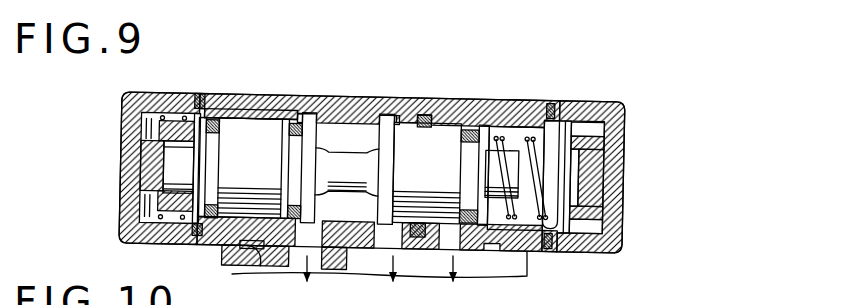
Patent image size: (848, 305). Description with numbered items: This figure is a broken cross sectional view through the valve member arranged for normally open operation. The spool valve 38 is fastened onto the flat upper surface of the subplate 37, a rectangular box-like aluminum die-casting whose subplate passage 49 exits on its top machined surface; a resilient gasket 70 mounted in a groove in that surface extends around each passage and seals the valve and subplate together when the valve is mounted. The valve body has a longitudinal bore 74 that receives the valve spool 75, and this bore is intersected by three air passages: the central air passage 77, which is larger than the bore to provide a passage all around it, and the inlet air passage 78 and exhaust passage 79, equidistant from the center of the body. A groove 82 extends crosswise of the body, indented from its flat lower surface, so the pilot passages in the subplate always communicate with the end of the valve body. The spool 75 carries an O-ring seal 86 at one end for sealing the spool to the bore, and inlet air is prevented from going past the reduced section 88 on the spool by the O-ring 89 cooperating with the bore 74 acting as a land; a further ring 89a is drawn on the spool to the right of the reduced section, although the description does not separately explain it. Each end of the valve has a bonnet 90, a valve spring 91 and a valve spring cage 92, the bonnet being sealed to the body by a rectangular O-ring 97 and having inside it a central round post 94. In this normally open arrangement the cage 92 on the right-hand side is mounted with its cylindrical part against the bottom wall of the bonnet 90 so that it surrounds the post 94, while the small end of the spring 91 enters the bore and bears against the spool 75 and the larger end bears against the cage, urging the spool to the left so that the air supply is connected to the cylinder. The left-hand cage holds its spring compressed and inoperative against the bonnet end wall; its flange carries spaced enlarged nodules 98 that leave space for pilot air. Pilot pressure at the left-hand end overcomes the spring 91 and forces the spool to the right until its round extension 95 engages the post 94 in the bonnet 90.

The subplate 37 is at (517, 285).
The spool valve 38 is at (364, 95).
The subplate passage 49 is at (307, 283).
The resilient gasket 70 is at (250, 258).
The longitudinal bore 74 is at (545, 115).
The valve spool 75 is at (443, 163).
The central air passage 77 is at (383, 245).
The inlet air passage 78 is at (299, 111).
The exhaust passage 79 is at (452, 246).
The groove 82 is at (268, 262).
The O-ring seal 86 is at (223, 111).
The reduced section 88 is at (347, 169).
The O-ring 89 is at (283, 153).
The bearing 89a is at (446, 116).
The bonnet 90 is at (125, 92).
The valve spring 91 is at (487, 123).
The valve spring cage 92 is at (606, 144).
The post 94 is at (603, 165).
The round extension 95 is at (516, 178).
The rectangular O-ring 97 is at (552, 111).
The nodules 98 is at (199, 104).